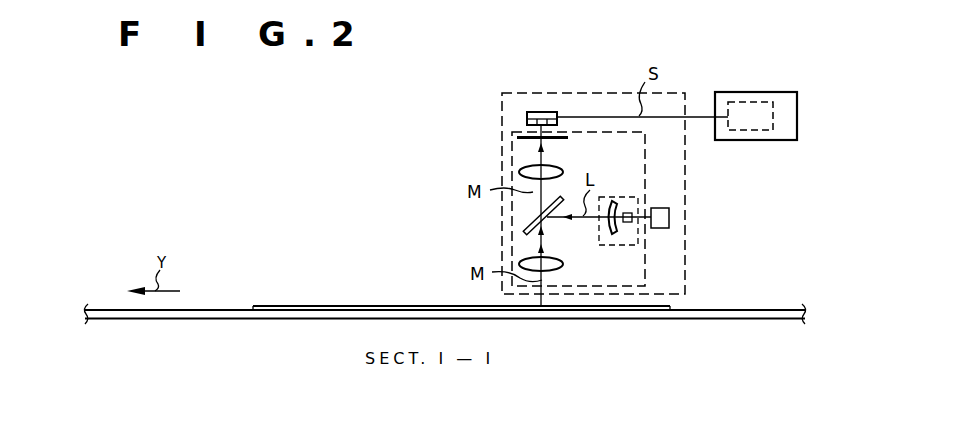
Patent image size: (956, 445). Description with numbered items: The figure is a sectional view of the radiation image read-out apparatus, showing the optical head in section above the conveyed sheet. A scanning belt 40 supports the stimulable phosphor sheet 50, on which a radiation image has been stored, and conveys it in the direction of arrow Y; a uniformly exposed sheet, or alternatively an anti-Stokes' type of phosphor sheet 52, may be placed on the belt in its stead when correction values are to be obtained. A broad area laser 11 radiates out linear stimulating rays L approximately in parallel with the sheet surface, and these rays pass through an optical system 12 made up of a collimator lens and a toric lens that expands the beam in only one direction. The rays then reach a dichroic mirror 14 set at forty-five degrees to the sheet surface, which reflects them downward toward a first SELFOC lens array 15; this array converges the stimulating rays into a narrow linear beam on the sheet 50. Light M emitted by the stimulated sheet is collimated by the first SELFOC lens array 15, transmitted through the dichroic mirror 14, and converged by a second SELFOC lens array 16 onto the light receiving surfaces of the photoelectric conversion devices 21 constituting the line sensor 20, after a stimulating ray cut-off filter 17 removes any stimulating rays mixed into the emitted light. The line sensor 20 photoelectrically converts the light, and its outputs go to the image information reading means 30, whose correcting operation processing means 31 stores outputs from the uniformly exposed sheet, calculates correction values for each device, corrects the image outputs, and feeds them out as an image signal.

The broad area laser 11 is at (669, 216).
The optical system 12 is at (608, 197).
The dichroic mirror 14 is at (523, 231).
The first SELFOC lens array 15 is at (560, 267).
The second SELFOC lens array 16 is at (527, 166).
The stimulating ray cut-off filter 17 is at (518, 135).
The line sensor 20 is at (517, 102).
The photoelectric conversion device 21 is at (527, 122).
The image information reading means 30 is at (773, 92).
The correcting operation processing means 31 is at (750, 116).
The scanning belt 40 is at (745, 310).
The stimulable phosphor sheet 50 is at (461, 286).
The anti-Stokes' type of phosphor sheet 52 is at (292, 306).